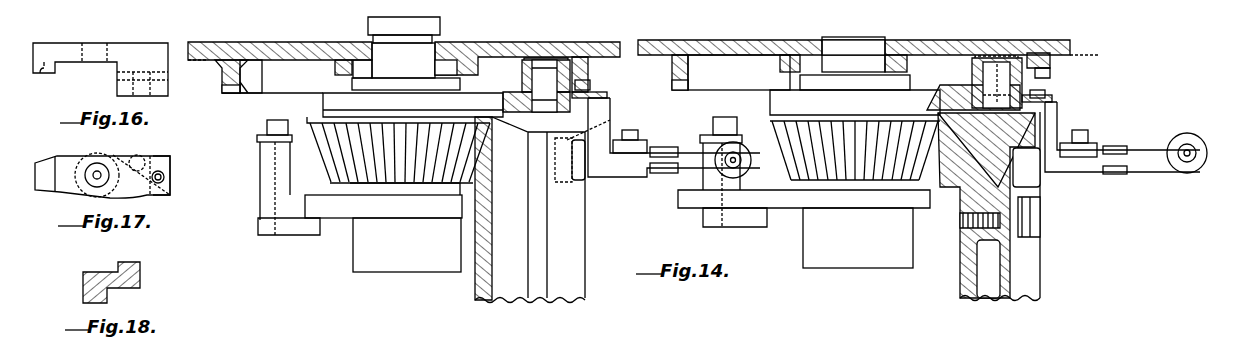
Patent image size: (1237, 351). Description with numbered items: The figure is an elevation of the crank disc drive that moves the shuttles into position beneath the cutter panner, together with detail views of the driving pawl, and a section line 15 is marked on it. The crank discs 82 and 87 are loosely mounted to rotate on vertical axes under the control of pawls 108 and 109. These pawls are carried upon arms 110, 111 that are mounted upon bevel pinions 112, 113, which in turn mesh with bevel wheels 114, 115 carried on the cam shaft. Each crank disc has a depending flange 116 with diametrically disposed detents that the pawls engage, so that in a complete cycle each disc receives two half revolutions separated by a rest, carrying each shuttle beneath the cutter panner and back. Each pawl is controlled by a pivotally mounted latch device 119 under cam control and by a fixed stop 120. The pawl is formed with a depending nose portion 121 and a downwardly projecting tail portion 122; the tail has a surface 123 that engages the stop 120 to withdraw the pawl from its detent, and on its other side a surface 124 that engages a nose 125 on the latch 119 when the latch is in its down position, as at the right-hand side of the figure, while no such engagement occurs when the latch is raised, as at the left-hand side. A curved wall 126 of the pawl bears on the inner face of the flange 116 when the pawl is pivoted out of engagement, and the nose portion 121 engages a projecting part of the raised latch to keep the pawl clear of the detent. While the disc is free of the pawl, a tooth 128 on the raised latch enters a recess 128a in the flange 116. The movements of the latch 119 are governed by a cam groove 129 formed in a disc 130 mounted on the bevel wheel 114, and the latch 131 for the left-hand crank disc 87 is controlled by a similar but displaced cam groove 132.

In FIG. 14, the section line 15 is at (185, 55).
In FIG. 14, the crank disc 82 is at (726, 48).
In FIG. 14, the crank disc 87 is at (503, 50).
In FIG. 14, the pawl 108 is at (960, 66).
In FIG. 14, the pawl 109 is at (525, 83).
In FIG. 16, the pawl 109 is at (120, 45).
In FIG. 17, the pawl 109 is at (76, 161).
In FIG. 14, the arm 110 is at (960, 100).
In FIG. 14, the arm 111 is at (337, 107).
In FIG. 14, the bevel pinion 112 is at (823, 173).
In FIG. 14, the bevel pinion 113 is at (420, 173).
In FIG. 14, the bevel wheel 114 is at (972, 260).
In FIG. 14, the bevel wheel 115 is at (473, 287).
In FIG. 14, the depending flange 116 is at (242, 77).
In FIG. 14, the latch device 119 is at (600, 96).
In FIG. 14, the fixed stop 120 is at (270, 128).
In FIG. 16, the depending nose portion 121 is at (50, 68).
In FIG. 17, the tail portion 122 is at (165, 165).
In FIG. 18, the tail portion 122 is at (98, 272).
In FIG. 16, the surface 123 is at (128, 68).
In FIG. 17, the surface 123 is at (162, 194).
In FIG. 17, the surface 124 is at (155, 158).
In FIG. 14, the nose 125 is at (998, 60).
In FIG. 17, the curved wall 126 is at (150, 150).
In FIG. 14, the tooth 128 is at (592, 85).
In FIG. 14, the recess 128a is at (227, 93).
In FIG. 14, the cam groove 129 is at (1040, 133).
In FIG. 14, the disc 130 is at (1020, 202).
In FIG. 14, the latch 131 is at (575, 283).
In FIG. 14, the cam groove 132 is at (606, 118).